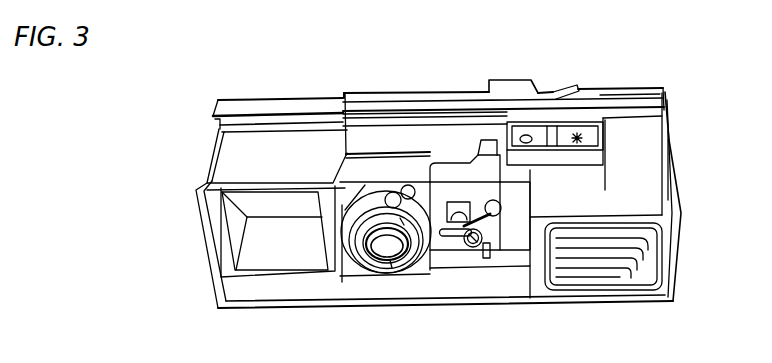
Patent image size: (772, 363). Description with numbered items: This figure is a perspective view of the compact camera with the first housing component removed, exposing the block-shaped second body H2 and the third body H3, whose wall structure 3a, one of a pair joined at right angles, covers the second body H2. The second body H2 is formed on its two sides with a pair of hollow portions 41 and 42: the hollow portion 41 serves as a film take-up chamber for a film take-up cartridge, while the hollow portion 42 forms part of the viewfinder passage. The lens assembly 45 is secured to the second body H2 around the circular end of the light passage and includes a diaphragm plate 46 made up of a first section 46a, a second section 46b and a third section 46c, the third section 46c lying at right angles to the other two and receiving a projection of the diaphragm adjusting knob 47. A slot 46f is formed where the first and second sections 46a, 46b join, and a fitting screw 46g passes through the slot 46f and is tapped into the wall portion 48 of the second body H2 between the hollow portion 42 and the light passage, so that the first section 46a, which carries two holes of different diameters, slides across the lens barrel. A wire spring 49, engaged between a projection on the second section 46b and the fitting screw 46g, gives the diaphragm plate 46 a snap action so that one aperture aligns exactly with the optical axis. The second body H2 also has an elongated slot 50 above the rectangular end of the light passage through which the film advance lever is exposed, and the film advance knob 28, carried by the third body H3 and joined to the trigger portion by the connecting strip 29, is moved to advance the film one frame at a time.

The hollow portion 41 is at (271, 258).
The hollow portion 42 is at (604, 268).
The lens assembly 45 is at (400, 273).
The diaphragm plate 46 is at (487, 250).
The first section 46a is at (344, 252).
The second section 46b is at (483, 190).
The third section 46c is at (438, 167).
The slot 46f is at (449, 237).
The fitting screw 46g is at (473, 248).
The diaphragm adjusting knob 47 is at (548, 137).
The wall portion 48 is at (502, 208).
The wire spring 49 is at (486, 250).
The elongated slot 50 is at (371, 160).
The film advance knob 28 is at (509, 79).
The connecting strip 29 is at (462, 118).
The wall structure 3a is at (618, 108).
The second body H2 is at (673, 152).
The third body H3 is at (650, 96).